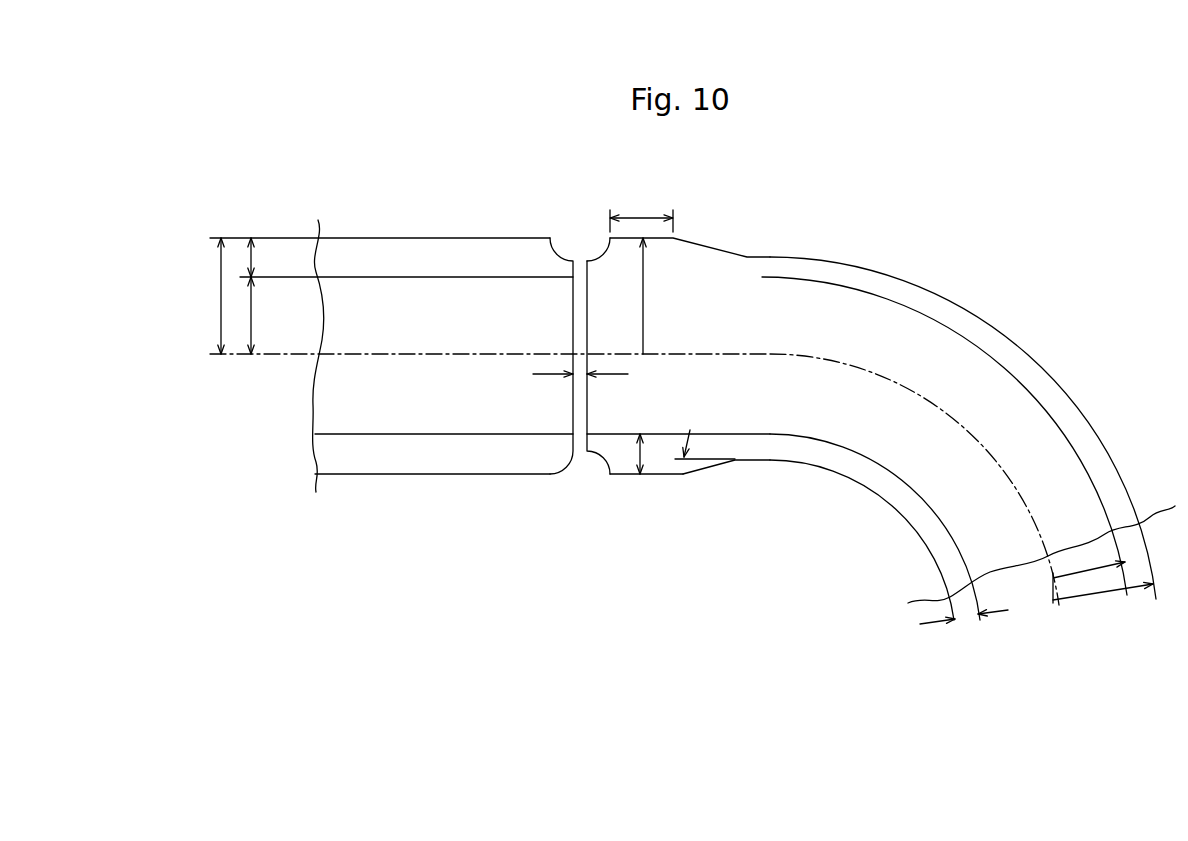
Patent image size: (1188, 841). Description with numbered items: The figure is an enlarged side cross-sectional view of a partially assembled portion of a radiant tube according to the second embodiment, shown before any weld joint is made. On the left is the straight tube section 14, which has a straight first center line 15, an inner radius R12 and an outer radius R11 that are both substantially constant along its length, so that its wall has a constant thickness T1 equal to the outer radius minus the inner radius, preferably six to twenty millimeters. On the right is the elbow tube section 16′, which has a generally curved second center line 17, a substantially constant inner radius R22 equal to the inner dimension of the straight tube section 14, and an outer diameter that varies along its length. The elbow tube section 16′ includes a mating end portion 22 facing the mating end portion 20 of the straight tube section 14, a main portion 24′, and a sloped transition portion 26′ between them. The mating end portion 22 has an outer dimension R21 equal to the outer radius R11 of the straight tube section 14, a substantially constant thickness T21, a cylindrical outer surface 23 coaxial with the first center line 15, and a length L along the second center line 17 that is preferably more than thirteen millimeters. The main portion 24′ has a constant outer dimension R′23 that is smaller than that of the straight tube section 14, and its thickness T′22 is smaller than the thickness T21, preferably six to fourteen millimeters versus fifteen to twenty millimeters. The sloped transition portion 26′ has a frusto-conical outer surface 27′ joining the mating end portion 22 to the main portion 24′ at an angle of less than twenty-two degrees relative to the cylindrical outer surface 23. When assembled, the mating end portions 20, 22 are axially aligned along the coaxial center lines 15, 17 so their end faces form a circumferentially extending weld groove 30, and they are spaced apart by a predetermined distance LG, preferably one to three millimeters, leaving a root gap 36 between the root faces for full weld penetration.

The straight tube section 14 is at (420, 236).
The first center line 15 is at (410, 352).
The root gap 36 is at (573, 318).
The groove 30 is at (583, 461).
The mating end portion 20 is at (540, 464).
The mating end portion 22 is at (619, 465).
The cylindrical outer surface 23 is at (661, 476).
The frusto-conical outer surface 27′ is at (720, 463).
The sloped transition portion 26′ is at (708, 253).
The elbow tube section 16′ is at (912, 278).
The main portion 24′ is at (997, 331).
The second center line 17 is at (912, 395).
The outer radius of straight tube section R11 is at (218, 297).
The thickness of straight tube section T1 is at (254, 257).
The inner radius of straight tube section R12 is at (253, 325).
The length of mating end portion L is at (640, 212).
The outer diameter of mating end portion R21 is at (645, 328).
The predetermined distance of root gap LG is at (591, 381).
The thickness of mating end portion T21 is at (642, 452).
The thickness of main portion T′22 is at (1008, 611).
The inner radius of elbow tube section R22 is at (1083, 579).
The outer diameter of main portion R′23 is at (1122, 596).